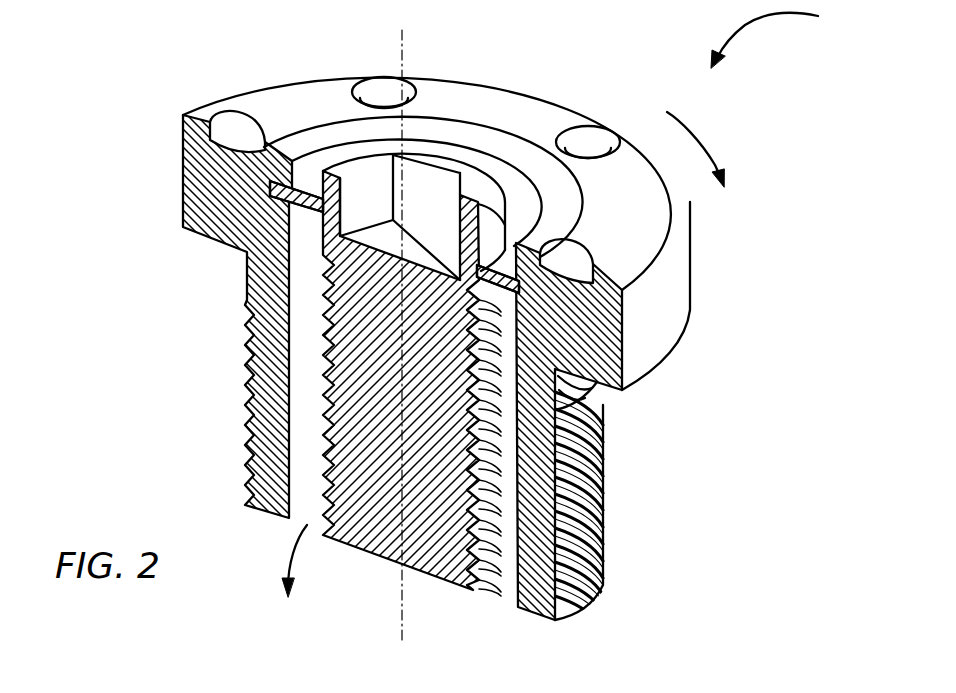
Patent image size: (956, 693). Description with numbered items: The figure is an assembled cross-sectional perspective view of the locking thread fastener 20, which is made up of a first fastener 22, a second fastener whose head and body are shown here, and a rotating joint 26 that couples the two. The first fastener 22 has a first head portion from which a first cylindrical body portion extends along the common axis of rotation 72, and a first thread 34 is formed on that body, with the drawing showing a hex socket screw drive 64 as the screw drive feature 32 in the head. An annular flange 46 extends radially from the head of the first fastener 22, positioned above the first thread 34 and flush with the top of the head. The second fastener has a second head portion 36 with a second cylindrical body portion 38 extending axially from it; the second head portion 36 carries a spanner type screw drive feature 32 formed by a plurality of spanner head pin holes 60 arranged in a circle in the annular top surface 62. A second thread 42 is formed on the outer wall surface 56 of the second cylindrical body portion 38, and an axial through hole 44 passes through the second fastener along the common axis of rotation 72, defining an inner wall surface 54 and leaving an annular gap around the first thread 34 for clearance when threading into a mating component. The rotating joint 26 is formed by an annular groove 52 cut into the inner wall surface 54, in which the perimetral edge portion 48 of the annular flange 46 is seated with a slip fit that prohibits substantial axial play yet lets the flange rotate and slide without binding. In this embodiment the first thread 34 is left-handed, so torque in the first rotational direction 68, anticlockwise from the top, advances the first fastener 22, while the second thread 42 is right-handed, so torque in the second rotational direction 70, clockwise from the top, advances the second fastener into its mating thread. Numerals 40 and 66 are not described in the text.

The locking thread fastener 20 is at (782, 35).
The first fastener 22 is at (441, 580).
The rotating joint 26 is at (553, 411).
The screw drive feature 32 is at (432, 160).
The first thread 34 is at (503, 441).
The second head portion 36 is at (593, 322).
The second cylindrical body portion 38 is at (363, 530).
The flange 40 is at (253, 97).
The second thread 42 is at (245, 431).
The axial through hole 44 is at (520, 213).
The annular flange 46 is at (487, 160).
The perimetral edge portion 48 is at (270, 186).
The annular groove 52 is at (248, 253).
The inner wall surface 54 is at (303, 343).
The outer wall surface 56 is at (555, 567).
The spanner head pin holes 60 is at (220, 130).
The annular top surface 62 is at (626, 201).
The hex socket screw drive 64 is at (355, 185).
The outer surface 66 is at (674, 311).
The first rotational direction 68 is at (292, 548).
The second rotational direction 70 is at (697, 133).
The common axis of rotation 72 is at (402, 593).